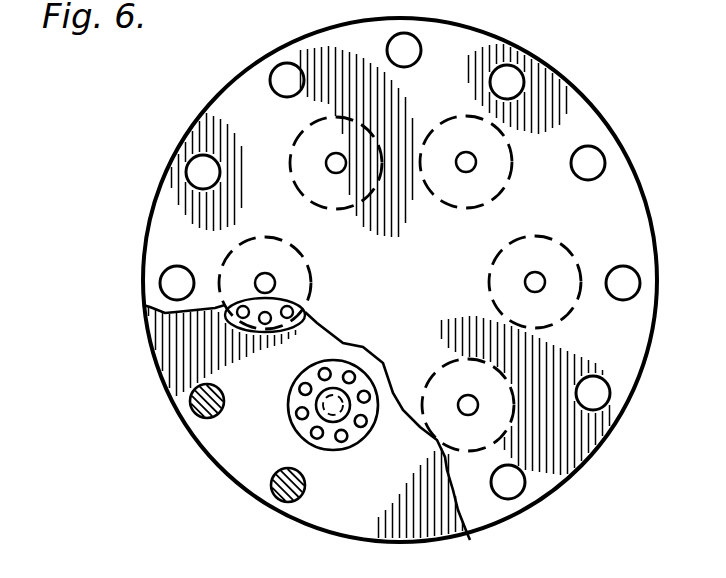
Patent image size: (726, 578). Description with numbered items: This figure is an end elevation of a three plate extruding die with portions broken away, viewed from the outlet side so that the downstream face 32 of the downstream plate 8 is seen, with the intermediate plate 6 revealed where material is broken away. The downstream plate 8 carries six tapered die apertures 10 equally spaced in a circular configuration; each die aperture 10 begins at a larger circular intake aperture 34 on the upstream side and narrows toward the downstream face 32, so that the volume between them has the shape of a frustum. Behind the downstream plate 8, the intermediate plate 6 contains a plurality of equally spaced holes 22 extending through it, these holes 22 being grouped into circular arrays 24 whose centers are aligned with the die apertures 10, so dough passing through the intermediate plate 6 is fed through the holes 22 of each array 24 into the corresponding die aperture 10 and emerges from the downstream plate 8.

The intermediate plate 6 is at (342, 520).
The downstream plate 8 is at (577, 440).
The die apertures 10 is at (547, 283).
The holes 22 is at (310, 423).
The circular arrays 24 is at (303, 422).
The downstream face 32 is at (620, 372).
The intake aperture 34 is at (573, 303).